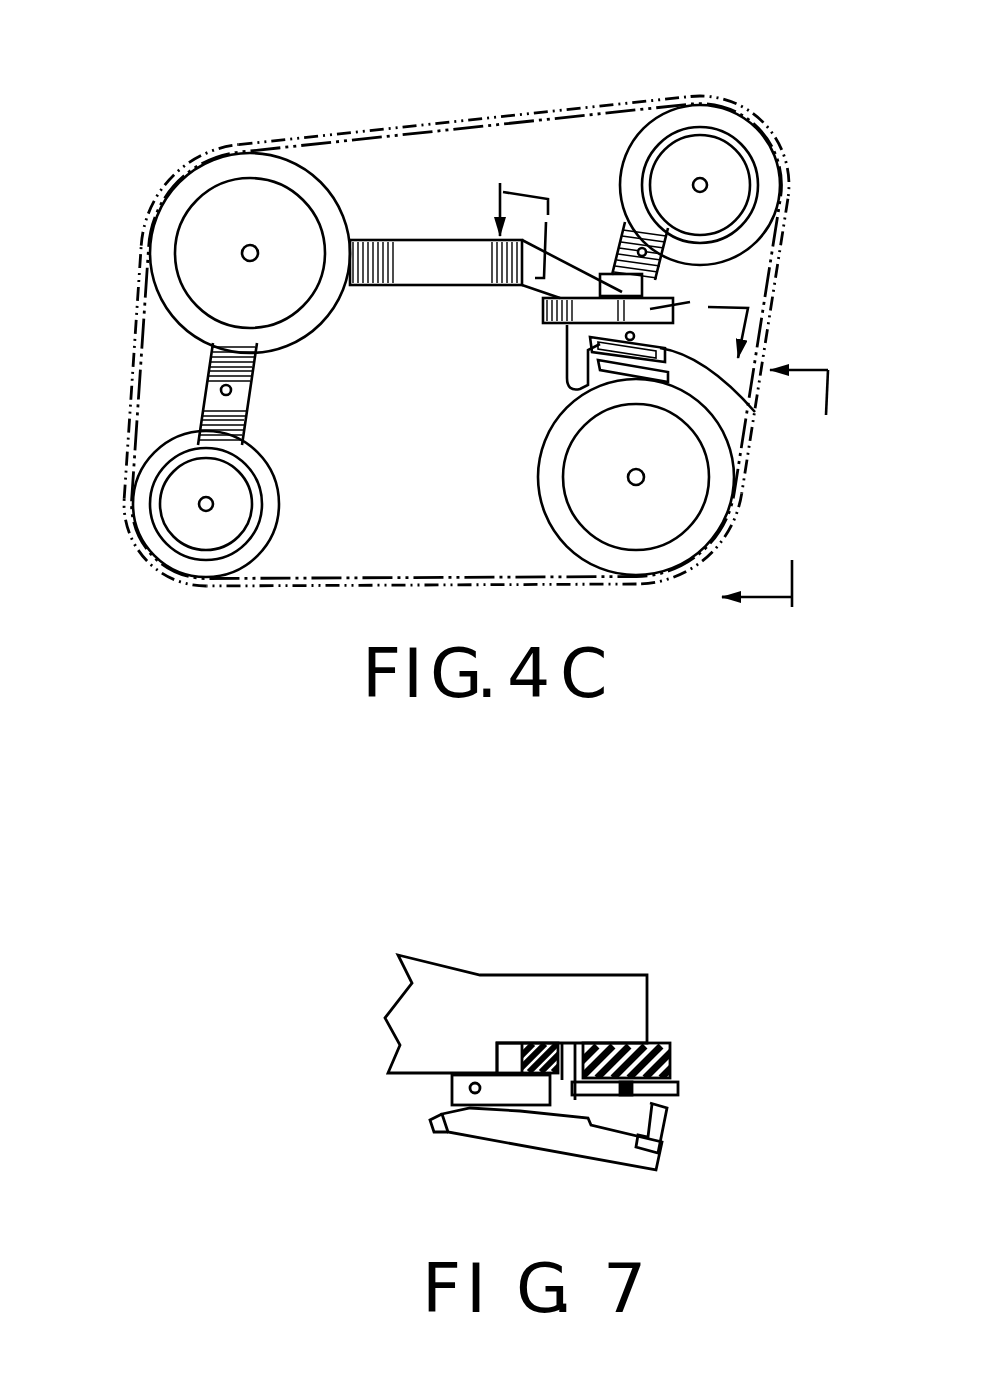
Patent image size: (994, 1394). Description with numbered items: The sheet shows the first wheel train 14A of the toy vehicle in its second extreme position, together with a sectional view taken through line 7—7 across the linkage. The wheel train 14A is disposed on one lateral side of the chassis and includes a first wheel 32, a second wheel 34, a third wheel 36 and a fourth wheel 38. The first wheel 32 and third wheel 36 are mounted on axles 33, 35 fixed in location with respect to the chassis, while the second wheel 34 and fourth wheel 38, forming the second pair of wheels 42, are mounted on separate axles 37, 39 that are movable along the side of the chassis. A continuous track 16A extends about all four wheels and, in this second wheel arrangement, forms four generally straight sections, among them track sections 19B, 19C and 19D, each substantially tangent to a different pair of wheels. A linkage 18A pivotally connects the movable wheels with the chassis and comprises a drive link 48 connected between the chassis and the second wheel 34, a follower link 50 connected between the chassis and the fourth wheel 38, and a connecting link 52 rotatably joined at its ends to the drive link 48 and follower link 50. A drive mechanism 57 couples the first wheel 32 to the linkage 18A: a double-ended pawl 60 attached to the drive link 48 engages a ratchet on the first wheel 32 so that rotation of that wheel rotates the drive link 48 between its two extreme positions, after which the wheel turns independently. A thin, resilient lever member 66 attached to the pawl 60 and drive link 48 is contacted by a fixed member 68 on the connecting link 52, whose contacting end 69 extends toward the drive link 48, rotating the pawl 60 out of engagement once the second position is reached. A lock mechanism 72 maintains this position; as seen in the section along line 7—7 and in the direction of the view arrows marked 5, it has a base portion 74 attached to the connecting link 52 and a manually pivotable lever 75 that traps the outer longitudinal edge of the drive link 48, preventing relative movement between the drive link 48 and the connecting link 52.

In FIG. 4C, the first wheel train 14A is at (186, 138).
In FIG. 4C, the continuous track 16A is at (498, 120).
In FIG. 4C, the linkage 18A is at (415, 232).
In FIG. 4C, the track section 19B is at (563, 110).
In FIG. 4C, the track section 19C is at (128, 378).
In FIG. 4C, the track section 19D is at (397, 590).
In FIG. 4C, the first wheel 32 is at (668, 581).
In FIG. 4C, the axle 33 is at (643, 483).
In FIG. 4C, the second wheel 34 is at (762, 135).
In FIG. 4C, the axle 35 is at (200, 510).
In FIG. 4C, the third wheel 36 is at (134, 494).
In FIG. 4C, the axle 37 is at (702, 178).
In FIG. 4C, the fourth wheel 38 is at (148, 283).
In FIG. 4C, the axle 39 is at (243, 248).
In FIG. 4C, the second pair of wheels 42 is at (330, 178).
In FIG. 4C, the drive link 48 is at (668, 358).
In FIG. 7, the drive link 48 is at (682, 1043).
In FIG. 4C, the follower link 50 is at (255, 408).
In FIG. 4C, the connecting link 52 is at (403, 275).
In FIG. 7, the connecting link 52 is at (557, 1000).
In FIG. 4C, the drive mechanism 57 is at (752, 290).
In FIG. 4C, the pawl 60 is at (747, 412).
In FIG. 7, the pawl 60 is at (685, 1092).
In FIG. 4C, the lever member 66 is at (660, 273).
In FIG. 7, the lever member 66 is at (633, 1080).
In FIG. 4C, the fixed member 68 is at (612, 280).
In FIG. 7, the fixed member 68 is at (525, 1045).
In FIG. 4C, the contacting end 69 is at (685, 322).
In FIG. 4C, the lock mechanism 72 is at (560, 332).
In FIG. 7, the lock mechanism 72 is at (497, 1137).
In FIG. 7, the base portion 74 is at (452, 1088).
In FIG. 7, the lever 75 is at (587, 1147).
In FIG. 4C, the section line 5- 5 is at (775, 487).
In FIG. 4C, the section line 7- 7 is at (620, 273).